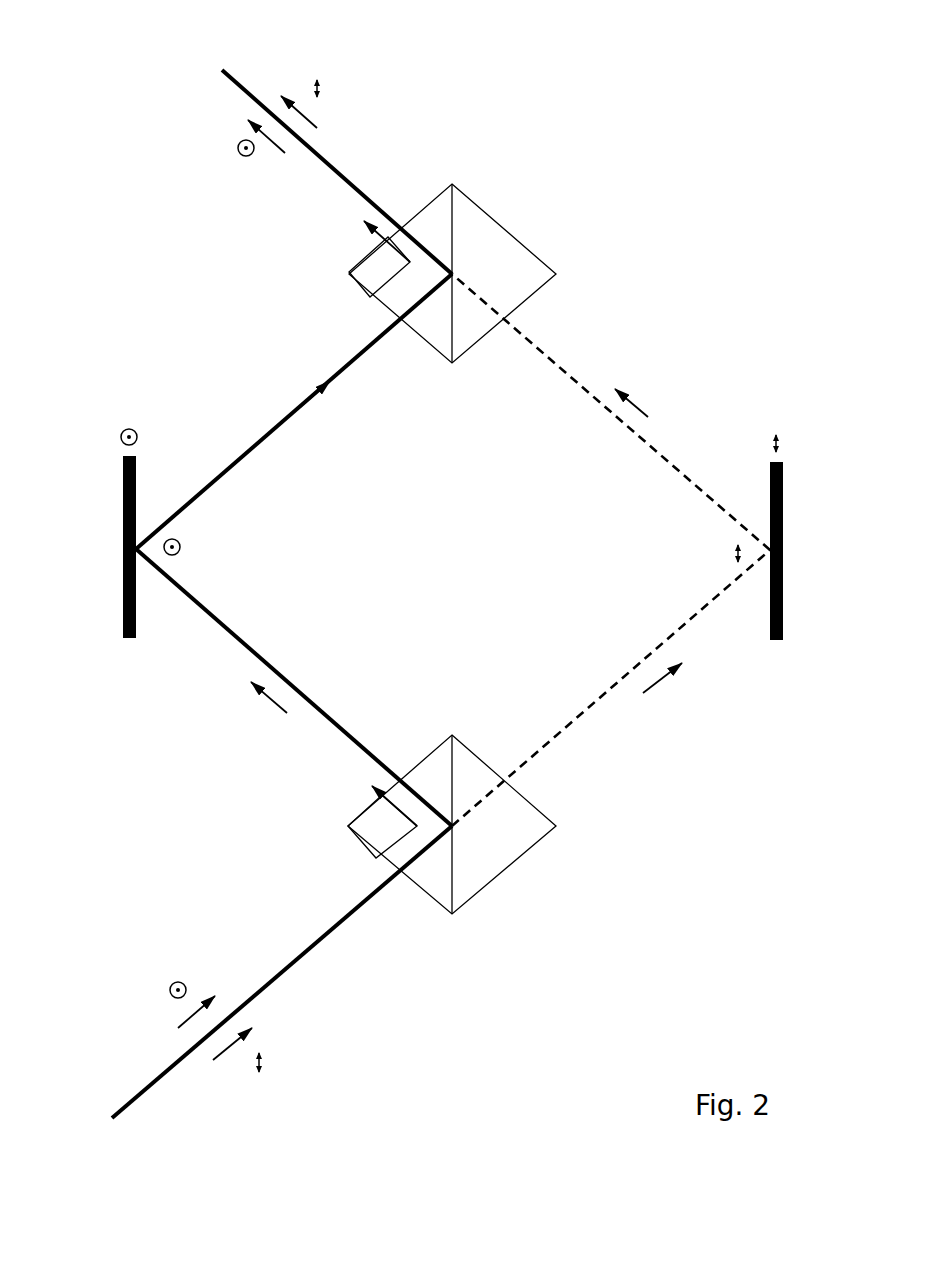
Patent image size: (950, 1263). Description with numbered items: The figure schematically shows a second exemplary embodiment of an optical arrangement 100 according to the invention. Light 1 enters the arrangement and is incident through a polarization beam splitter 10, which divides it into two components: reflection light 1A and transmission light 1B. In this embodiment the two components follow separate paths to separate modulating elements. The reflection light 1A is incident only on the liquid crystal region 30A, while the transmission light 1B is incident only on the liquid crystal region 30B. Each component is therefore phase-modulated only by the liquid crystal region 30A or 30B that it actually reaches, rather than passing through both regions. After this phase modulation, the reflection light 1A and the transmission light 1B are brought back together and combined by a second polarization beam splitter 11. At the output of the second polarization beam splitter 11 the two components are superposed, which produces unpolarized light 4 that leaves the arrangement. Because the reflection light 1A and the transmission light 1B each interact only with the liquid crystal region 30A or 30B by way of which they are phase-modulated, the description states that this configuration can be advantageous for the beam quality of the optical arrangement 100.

The optical arrangement 100 is at (717, 63).
The light 1 is at (333, 937).
The reflection light 1A is at (330, 728).
The transmission light 1B is at (593, 702).
The unpolarized light 4 is at (340, 182).
The polarization beam splitter 10 is at (548, 818).
The second polarization beam splitter 11 is at (528, 240).
The liquid crystal region 30A is at (123, 498).
The liquid crystal region 30B is at (783, 610).